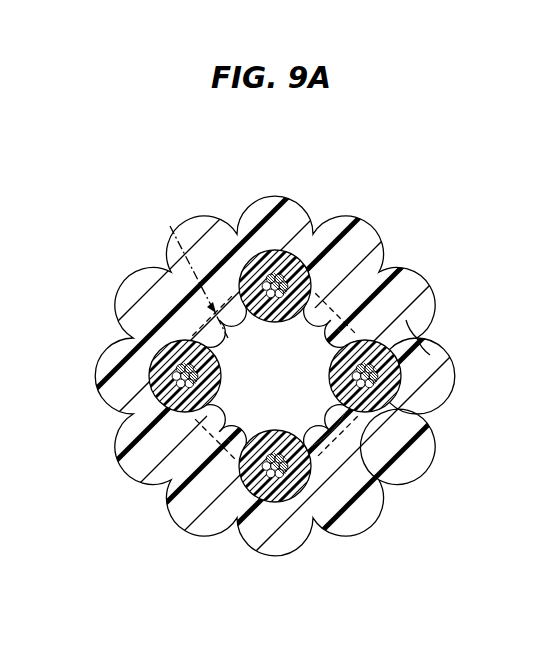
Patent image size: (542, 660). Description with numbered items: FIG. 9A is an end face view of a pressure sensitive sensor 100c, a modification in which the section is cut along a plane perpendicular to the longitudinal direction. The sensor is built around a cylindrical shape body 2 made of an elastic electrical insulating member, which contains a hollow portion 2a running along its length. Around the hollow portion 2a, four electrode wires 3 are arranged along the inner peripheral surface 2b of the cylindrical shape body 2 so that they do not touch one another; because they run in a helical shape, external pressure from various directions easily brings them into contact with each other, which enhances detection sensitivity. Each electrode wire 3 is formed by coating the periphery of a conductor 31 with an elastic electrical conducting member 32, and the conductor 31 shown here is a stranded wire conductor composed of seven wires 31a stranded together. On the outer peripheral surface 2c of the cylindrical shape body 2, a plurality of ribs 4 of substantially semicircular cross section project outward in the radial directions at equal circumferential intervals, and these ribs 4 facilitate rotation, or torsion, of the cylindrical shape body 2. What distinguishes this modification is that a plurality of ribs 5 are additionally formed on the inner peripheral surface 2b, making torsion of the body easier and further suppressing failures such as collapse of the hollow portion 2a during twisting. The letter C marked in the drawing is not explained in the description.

The pressure sensitive sensor 100c is at (138, 237).
The cylindrical shape body 2 is at (377, 223).
The hollow portion 2a is at (312, 333).
The inner peripheral surface 2b is at (274, 375).
The outer peripheral surface 2c is at (420, 342).
The electrode wire 3 is at (150, 355).
The conductor 31 is at (160, 370).
The wire 31a is at (174, 377).
The elastic electrical conducting member 32 is at (152, 400).
The rib 4 is at (450, 384).
The rib 5 is at (210, 421).
The center line C is at (194, 270).